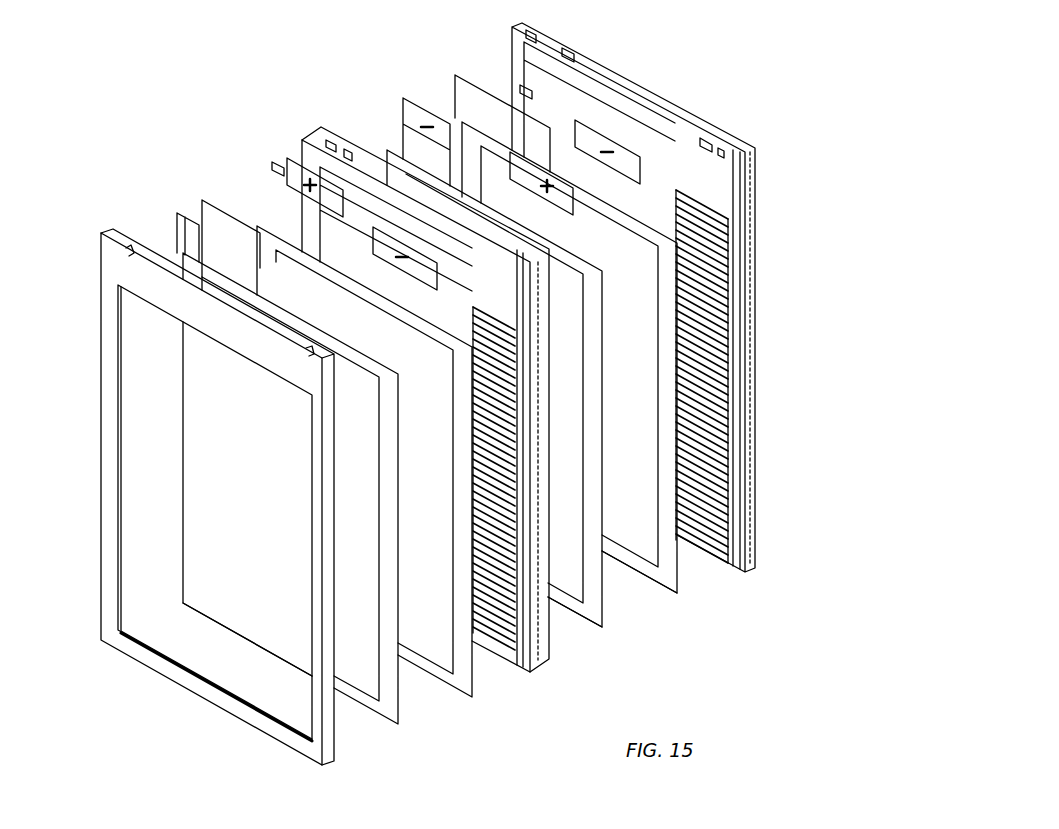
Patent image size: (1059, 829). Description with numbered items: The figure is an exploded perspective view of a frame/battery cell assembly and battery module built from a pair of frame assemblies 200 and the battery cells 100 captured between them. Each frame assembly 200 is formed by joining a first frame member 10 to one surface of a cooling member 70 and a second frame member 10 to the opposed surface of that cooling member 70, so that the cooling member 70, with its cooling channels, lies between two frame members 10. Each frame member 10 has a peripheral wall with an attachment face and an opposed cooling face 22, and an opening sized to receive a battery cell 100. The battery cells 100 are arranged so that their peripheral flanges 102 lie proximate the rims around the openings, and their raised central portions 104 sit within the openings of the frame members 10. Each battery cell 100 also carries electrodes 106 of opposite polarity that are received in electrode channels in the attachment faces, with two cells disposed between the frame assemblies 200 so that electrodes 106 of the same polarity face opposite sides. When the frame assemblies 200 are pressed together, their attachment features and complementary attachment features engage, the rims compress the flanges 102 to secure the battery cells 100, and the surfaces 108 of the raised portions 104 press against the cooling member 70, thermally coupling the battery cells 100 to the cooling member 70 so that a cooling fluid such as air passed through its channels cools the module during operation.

The frame member 10 is at (100, 402).
The cooling face 22 is at (122, 268).
The cooling member 70 is at (757, 231).
The battery cell 100 is at (479, 700).
The cell flange 102 is at (260, 177).
The raised central portion 104 is at (193, 513).
The electrode 106 is at (150, 3).
The cell surface 108 is at (257, 608).
The frame assembly 200 is at (332, 119).